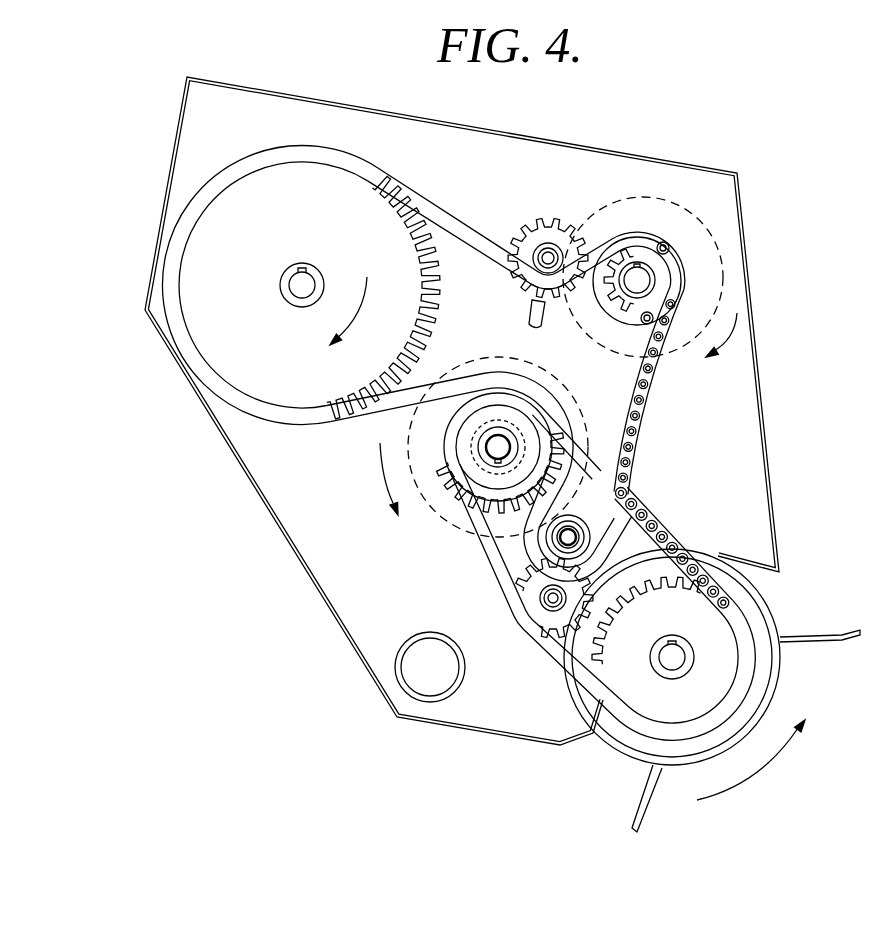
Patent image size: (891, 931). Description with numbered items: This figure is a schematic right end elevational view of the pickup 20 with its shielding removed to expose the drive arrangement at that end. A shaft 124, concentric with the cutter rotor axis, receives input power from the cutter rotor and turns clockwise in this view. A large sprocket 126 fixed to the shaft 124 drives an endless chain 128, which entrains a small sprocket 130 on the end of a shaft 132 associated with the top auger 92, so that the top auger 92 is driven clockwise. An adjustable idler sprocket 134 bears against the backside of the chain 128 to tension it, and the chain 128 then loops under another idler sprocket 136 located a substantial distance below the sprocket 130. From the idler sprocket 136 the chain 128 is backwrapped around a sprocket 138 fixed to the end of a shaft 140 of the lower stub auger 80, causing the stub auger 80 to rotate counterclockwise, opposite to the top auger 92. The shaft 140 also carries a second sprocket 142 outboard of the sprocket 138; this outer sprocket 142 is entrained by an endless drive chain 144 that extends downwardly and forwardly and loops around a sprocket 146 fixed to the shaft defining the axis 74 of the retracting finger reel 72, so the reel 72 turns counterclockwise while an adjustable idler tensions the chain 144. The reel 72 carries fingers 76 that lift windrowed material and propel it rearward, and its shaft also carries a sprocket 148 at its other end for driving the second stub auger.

The pickup 20 is at (665, 126).
The retracting finger reel 72 is at (783, 607).
The axis 74 is at (672, 660).
The fingers 76 is at (642, 792).
The lower stub auger 80 is at (472, 352).
The top auger 92 is at (706, 227).
The shaft 124 is at (297, 286).
The large sprocket 126 is at (248, 192).
The endless chain 128 is at (440, 218).
The small sprocket 130 is at (628, 308).
The shaft 132 is at (630, 272).
The adjustable idler sprocket 134 is at (540, 229).
The idler sprocket 136 is at (595, 512).
The sprocket 138 is at (427, 411).
The shaft 140 is at (503, 440).
The second sprocket 142 is at (490, 483).
The endless drive chain 144 is at (565, 658).
The sprocket 146 is at (532, 594).
The sprocket 148 is at (640, 700).